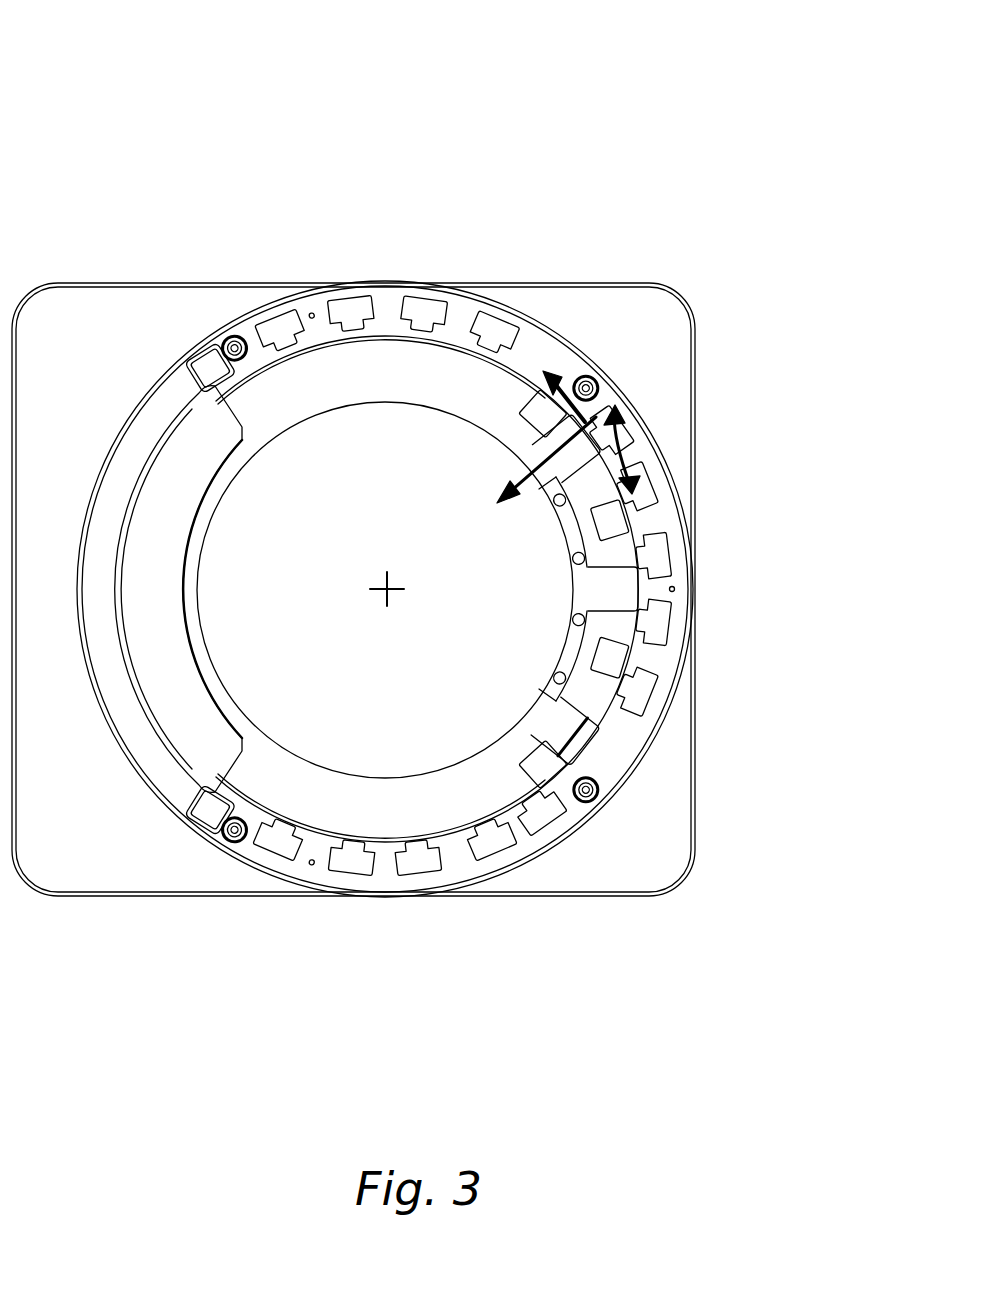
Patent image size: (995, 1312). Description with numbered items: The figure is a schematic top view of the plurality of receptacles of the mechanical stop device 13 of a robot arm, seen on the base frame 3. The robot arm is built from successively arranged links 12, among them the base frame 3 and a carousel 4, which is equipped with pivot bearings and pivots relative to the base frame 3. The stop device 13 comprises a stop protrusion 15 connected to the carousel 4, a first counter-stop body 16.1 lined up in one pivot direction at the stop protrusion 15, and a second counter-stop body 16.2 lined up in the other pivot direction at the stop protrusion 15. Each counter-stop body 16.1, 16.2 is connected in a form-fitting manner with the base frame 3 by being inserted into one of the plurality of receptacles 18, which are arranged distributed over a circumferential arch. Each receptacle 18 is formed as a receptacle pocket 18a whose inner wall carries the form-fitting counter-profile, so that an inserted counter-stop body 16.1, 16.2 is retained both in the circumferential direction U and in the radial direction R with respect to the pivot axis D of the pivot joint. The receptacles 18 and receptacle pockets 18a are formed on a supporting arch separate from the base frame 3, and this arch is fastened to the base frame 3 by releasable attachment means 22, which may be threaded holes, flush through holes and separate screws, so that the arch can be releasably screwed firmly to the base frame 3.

The mechanical stop device 13 is at (118, 120).
The base frame 3 is at (68, 860).
The links 12 is at (353, 641).
The carousel 4 is at (300, 752).
The stop protrusion 15 is at (618, 595).
The first counter-stop body 16.1 is at (597, 482).
The second counter-stop body 16.2 is at (585, 728).
The receptacles 18 is at (572, 599).
The receptacle pocket 18a is at (493, 322).
The releasable attachment means 22 is at (232, 350).
The pivot axis D is at (392, 594).
The radial direction R is at (520, 484).
The circumferential direction U is at (600, 480).